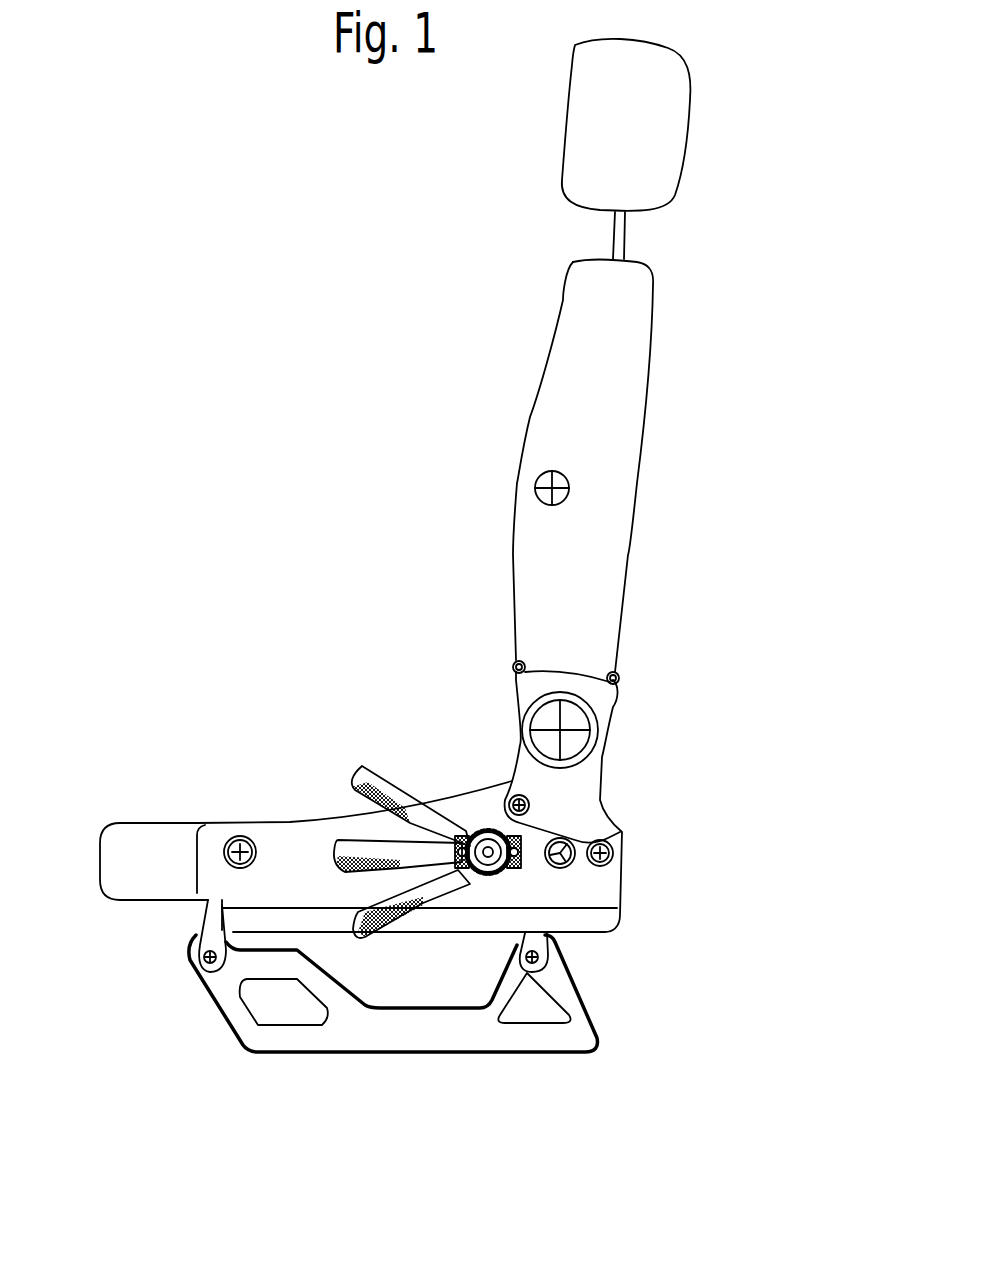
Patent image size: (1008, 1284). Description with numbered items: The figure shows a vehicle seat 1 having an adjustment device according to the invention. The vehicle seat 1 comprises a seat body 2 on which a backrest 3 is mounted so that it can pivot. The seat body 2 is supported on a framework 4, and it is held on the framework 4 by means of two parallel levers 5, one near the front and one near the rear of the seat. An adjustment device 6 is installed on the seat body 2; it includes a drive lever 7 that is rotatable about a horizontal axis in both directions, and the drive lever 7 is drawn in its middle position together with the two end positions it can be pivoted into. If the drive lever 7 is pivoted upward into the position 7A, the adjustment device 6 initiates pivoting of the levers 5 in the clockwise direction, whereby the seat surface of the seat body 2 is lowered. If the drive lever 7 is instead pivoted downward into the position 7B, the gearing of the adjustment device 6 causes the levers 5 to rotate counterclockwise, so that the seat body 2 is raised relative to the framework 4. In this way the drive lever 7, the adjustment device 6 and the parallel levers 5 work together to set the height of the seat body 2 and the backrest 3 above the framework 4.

The vehicle seat 1 is at (440, 561).
The seat body 2 is at (284, 843).
The backrest 3 is at (610, 532).
The framework 4 is at (435, 1033).
The parallel levers 5 is at (213, 927).
The adjustment device 6 is at (478, 806).
The drive lever 7 is at (362, 848).
The upward position of the drive lever 7A is at (378, 783).
The downward position of the drive lever 7B is at (374, 913).